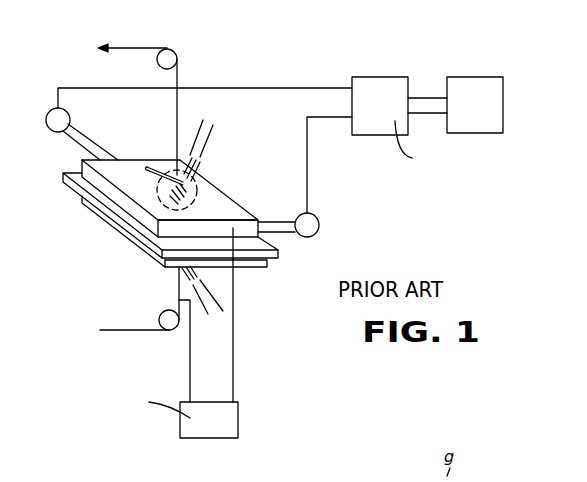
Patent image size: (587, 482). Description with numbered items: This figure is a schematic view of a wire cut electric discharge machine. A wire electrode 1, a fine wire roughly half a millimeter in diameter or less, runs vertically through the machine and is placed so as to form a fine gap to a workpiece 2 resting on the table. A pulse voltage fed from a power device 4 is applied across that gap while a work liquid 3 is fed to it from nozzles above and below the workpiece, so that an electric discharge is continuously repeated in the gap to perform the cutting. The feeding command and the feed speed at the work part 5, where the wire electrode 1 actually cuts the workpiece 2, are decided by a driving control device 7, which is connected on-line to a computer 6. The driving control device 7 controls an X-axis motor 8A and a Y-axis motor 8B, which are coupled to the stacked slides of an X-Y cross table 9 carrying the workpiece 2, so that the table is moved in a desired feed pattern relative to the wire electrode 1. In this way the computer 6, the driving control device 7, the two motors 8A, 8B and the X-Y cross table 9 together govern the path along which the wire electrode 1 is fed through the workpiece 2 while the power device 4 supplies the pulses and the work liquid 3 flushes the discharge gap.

The wire electrode 1 is at (117, 330).
The workpiece 2 is at (233, 201).
The work liquid 3 is at (201, 158).
The pulse power supply 4 is at (239, 418).
The work part 5 is at (199, 183).
The computer 6 is at (506, 103).
The driving control device 7 is at (377, 138).
The X-axis motor 8A is at (319, 226).
The Y-axis motor 8B is at (48, 116).
The X-Y cross table 9 is at (165, 268).